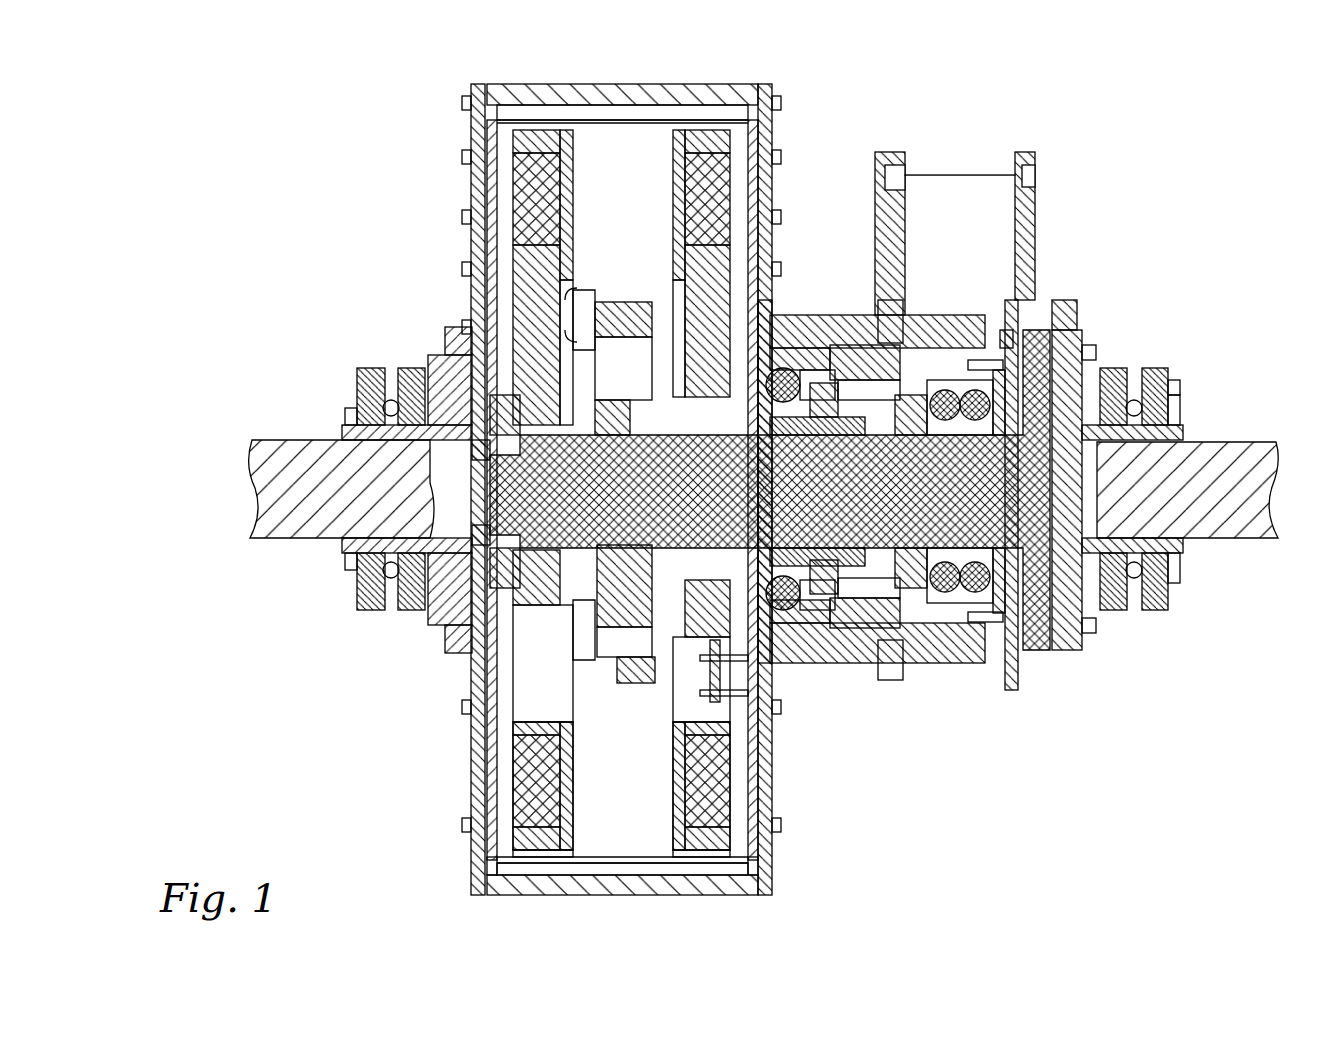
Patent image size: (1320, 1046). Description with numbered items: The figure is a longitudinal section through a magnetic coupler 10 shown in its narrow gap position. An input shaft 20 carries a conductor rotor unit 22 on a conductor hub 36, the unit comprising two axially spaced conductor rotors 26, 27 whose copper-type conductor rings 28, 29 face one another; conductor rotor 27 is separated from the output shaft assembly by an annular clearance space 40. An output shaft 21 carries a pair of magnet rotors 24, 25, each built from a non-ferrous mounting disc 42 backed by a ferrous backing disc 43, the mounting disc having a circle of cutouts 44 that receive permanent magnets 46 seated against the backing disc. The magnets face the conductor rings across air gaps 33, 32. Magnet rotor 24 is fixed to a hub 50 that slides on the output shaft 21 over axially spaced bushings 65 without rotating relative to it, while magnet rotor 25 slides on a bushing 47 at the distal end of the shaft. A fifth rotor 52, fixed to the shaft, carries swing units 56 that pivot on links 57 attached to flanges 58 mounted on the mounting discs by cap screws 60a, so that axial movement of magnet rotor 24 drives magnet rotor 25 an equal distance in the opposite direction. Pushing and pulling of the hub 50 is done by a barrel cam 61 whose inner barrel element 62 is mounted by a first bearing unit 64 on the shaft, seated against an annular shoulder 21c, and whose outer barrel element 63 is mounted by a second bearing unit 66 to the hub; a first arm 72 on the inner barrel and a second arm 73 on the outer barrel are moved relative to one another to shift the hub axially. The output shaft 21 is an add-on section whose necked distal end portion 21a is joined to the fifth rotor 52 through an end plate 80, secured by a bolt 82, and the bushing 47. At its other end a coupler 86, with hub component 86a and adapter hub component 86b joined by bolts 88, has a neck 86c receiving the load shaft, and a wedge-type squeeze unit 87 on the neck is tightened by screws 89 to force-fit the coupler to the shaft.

The magnetic coupler 10 is at (835, 100).
The input shaft 20 is at (312, 540).
The output shaft 21 is at (845, 350).
The distal end portion 21a is at (470, 540).
The annular shoulder 21c is at (995, 330).
The conductor rotor unit 22 is at (352, 190).
The magnet rotor 24 is at (638, 183).
The magnet rotor 25 is at (608, 797).
The conductor rotor 26 is at (470, 875).
The conductor rotor 27 is at (775, 875).
The conductor ring 28 is at (480, 800).
The conductor ring 29 is at (775, 830).
The air gap 32 is at (500, 150).
The air gap 33 is at (740, 155).
The conductor hub 36 is at (455, 330).
The annular clearance space 40 is at (772, 303).
The mounting disc 42 is at (536, 845).
The backing disc 43 is at (555, 768).
The cutouts 44 is at (500, 760).
The permanent magnets 46 is at (558, 215).
The bushing 47 is at (490, 560).
The hub 50 is at (862, 580).
The fifth rotor 52 is at (625, 295).
The swing unit 56 is at (625, 672).
The link 57 is at (595, 300).
The flange 58 is at (735, 672).
The cap screws 60a is at (745, 720).
The barrel cam 61 is at (966, 185).
The inner barrel element 62 is at (1008, 645).
The barrel element 63 is at (935, 315).
The first bearing unit 64 is at (1012, 645).
The bushings 65 is at (870, 560).
The second bearing unit 66 is at (830, 620).
The first arm 72 is at (1028, 160).
The second arm 73 is at (890, 160).
The end plate 80 is at (495, 445).
The bolt 82 is at (392, 400).
The coupler 86 is at (1075, 330).
The hub component 86a is at (1085, 320).
The adapter hub component 86b is at (1092, 345).
The neck 86c is at (1183, 430).
The wedge-type squeeze unit 87 is at (1158, 325).
The bolts 88 is at (1158, 355).
The screws 89 is at (1180, 368).